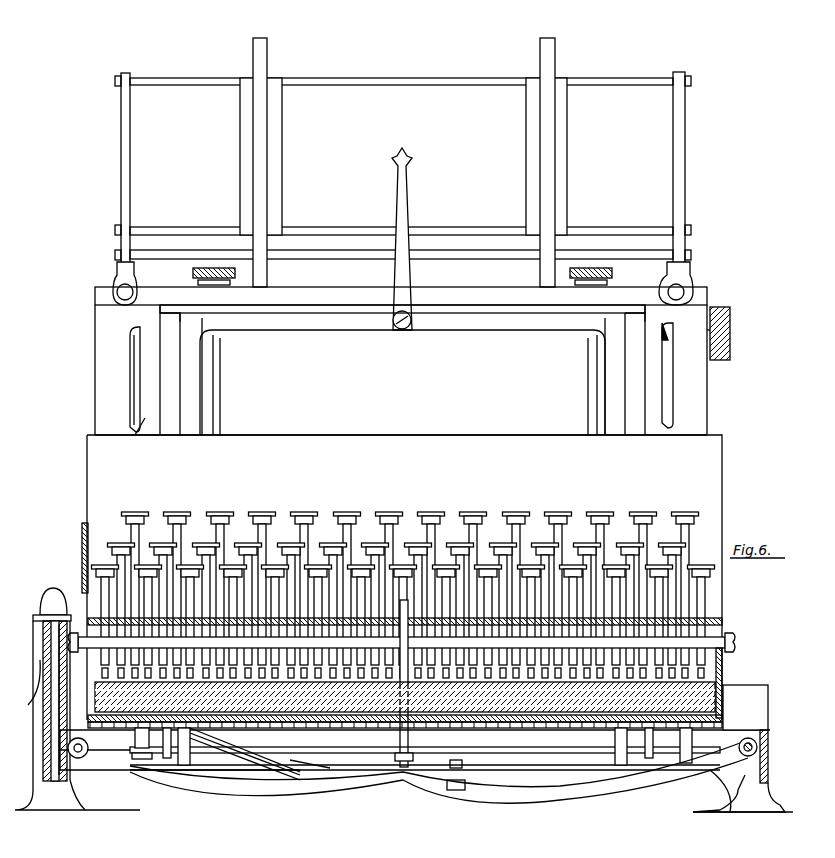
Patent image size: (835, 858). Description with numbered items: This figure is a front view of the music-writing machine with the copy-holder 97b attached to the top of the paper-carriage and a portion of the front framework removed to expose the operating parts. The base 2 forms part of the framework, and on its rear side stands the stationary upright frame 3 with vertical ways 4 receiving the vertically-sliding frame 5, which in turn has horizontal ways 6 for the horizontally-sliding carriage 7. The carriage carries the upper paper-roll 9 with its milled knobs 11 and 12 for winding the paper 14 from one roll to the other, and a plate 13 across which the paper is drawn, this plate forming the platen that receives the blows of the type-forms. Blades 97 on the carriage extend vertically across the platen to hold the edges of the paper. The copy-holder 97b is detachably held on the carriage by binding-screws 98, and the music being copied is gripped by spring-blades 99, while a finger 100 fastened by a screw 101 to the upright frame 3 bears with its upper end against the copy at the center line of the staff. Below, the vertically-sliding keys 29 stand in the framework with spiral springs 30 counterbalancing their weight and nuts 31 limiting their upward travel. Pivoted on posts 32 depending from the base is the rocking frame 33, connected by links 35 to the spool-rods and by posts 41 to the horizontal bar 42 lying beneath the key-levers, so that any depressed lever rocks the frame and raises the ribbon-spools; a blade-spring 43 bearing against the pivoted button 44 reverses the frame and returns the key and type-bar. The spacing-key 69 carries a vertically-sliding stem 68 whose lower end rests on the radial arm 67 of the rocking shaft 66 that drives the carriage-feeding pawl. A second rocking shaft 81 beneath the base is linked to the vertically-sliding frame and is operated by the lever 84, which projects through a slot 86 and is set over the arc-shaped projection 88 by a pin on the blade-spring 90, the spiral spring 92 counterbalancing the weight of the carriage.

The base 2 is at (768, 733).
The stationary upright frame 3 is at (318, 332).
The vertical ways 4 is at (178, 315).
The vertically-sliding frame 5 is at (170, 378).
The horizontal ways 6 is at (160, 314).
The horizontally-sliding carriage 7 is at (326, 298).
The upper paper-roll 9 is at (670, 335).
The milled knob 11 is at (82, 548).
The milled knob 12 is at (730, 335).
The plate 13 is at (135, 425).
The paper 14 is at (130, 372).
The vertically-sliding keys 29 is at (183, 540).
The spiral springs 30 is at (705, 700).
The nuts 31 is at (722, 720).
The posts 32 is at (190, 742).
The rocking frame 33 is at (275, 760).
The links 35 is at (401, 743).
The posts 41 is at (135, 742).
The horizontal bar 42 is at (560, 735).
The blade-spring 43 is at (235, 752).
The button 44 is at (430, 760).
The rocking shaft 66 is at (748, 738).
The radial arm 67 is at (632, 788).
The vertically-sliding stem 68 is at (360, 700).
The spacing-key 69 is at (695, 637).
The rocking shaft 81 is at (312, 770).
The lever 84 is at (43, 722).
The slot 86 is at (43, 632).
The arc-shaped projection 88 is at (43, 658).
The blade-spring 90 is at (33, 690).
The spiral spring 92 is at (88, 750).
The blades 97 is at (220, 397).
The copy-holder 97b is at (408, 78).
The binding-screws 98 is at (113, 290).
The spring-blades 99 is at (267, 197).
The finger 100 is at (412, 212).
The screw 101 is at (404, 332).